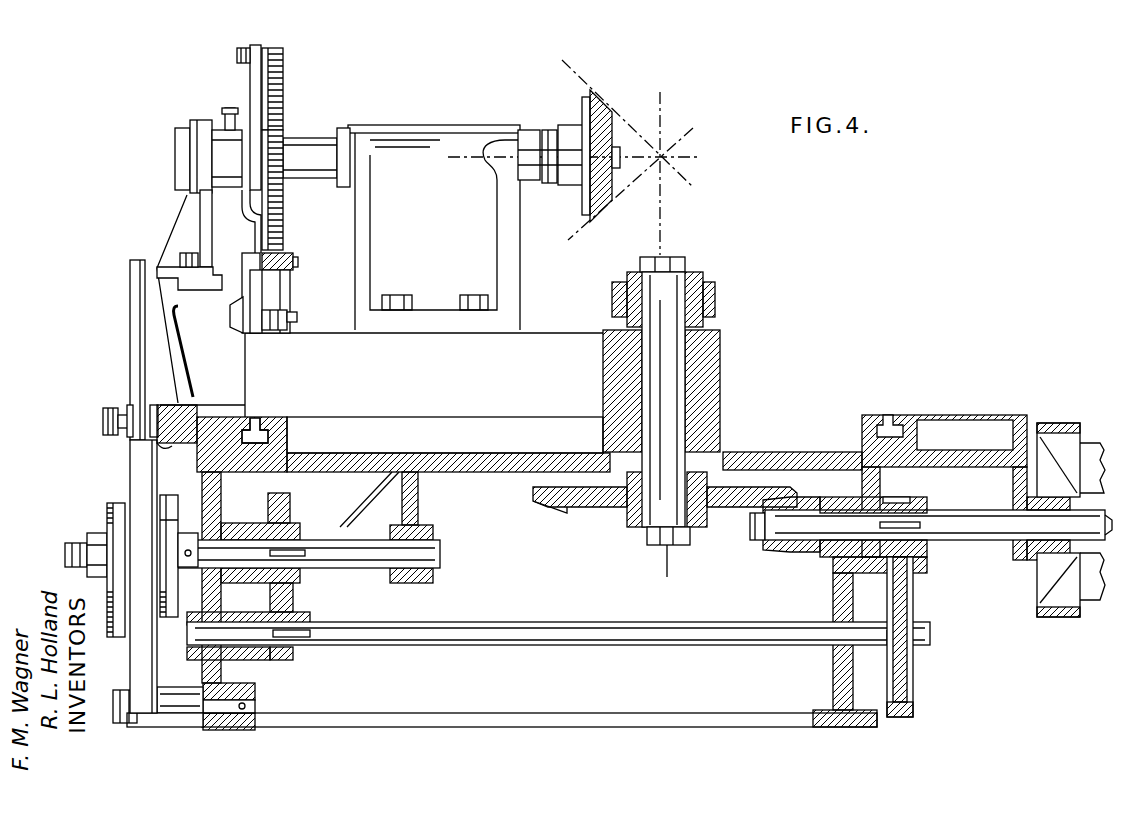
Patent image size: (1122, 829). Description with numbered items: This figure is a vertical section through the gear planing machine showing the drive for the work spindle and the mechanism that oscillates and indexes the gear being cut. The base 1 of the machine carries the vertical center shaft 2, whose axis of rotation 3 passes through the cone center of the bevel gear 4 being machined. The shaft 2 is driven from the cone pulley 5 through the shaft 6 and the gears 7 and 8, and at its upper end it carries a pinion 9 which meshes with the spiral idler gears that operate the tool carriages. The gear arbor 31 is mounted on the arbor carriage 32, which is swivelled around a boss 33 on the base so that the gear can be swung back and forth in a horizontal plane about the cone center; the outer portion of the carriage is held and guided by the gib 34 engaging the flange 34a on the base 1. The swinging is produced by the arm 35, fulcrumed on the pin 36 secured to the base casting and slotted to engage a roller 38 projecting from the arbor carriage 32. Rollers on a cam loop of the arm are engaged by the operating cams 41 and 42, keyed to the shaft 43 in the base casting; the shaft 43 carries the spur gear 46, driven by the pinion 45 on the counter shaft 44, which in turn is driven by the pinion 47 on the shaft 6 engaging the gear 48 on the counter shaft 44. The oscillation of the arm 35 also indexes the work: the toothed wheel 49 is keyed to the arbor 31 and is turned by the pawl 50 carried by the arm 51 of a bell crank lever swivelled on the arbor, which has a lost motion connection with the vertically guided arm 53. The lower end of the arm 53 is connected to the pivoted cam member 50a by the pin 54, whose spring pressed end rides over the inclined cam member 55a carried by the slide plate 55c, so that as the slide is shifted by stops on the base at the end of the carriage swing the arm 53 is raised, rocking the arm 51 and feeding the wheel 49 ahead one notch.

The base 1 is at (478, 470).
The vertical center shaft 2 is at (675, 366).
The axis of rotation 3 is at (662, 232).
The bevel gear 4 is at (597, 102).
The cone pulley 5 is at (1050, 617).
The shaft 6 is at (978, 527).
The gear 7 is at (787, 552).
The gear 8 is at (598, 503).
The pinion 9 is at (715, 293).
The gear arbor 31 is at (313, 147).
The arbor carriage 32 is at (488, 228).
The boss 33 is at (705, 398).
The gib 34 is at (170, 446).
The flange 34a is at (287, 432).
The arm 35 is at (135, 660).
The fulcrum pin 36 is at (255, 707).
The roller 38 is at (127, 407).
The operating cam 41 is at (170, 497).
The operating cam 42 is at (117, 503).
The shaft 43 is at (440, 555).
The counter shaft 44 is at (607, 640).
The pinion 45 is at (293, 657).
The spur gear 46 is at (293, 597).
The pinion 47 is at (910, 500).
The gear 48 is at (912, 585).
The toothed wheel 49 is at (283, 210).
The pawl 50 is at (283, 53).
The cam member 50a is at (290, 280).
The arm 51 is at (250, 92).
The arm 53 is at (258, 225).
The pin 54 is at (283, 262).
The cam member 55a is at (250, 296).
The slide plate 55c is at (230, 313).